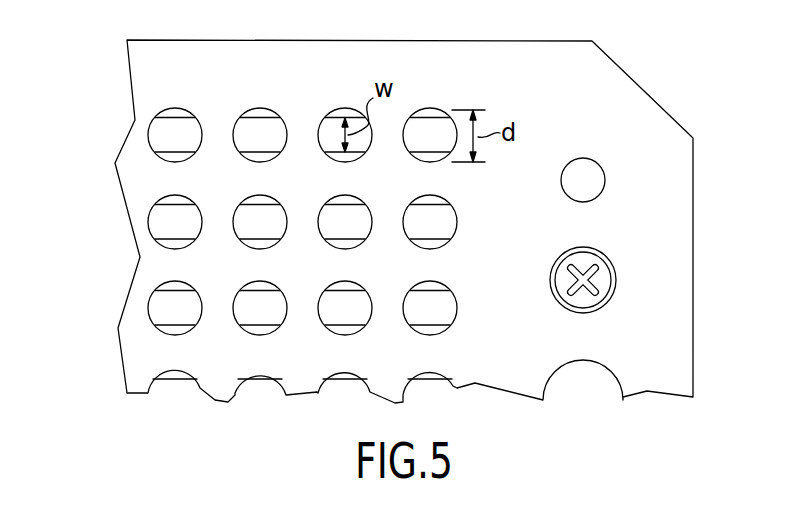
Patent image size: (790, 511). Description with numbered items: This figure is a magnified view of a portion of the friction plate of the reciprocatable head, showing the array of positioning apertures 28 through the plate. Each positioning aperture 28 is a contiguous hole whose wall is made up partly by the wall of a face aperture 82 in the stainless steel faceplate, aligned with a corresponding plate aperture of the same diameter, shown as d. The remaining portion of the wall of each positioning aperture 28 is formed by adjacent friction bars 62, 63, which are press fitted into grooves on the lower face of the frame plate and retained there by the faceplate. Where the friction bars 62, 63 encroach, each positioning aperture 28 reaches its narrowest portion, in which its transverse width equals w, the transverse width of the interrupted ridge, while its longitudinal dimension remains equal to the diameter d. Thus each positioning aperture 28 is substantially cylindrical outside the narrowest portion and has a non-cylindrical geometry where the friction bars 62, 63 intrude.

The positioning aperture 28 is at (160, 228).
The friction bar 62 is at (260, 110).
The friction bar 63 is at (170, 153).
The face aperture 82 is at (432, 110).